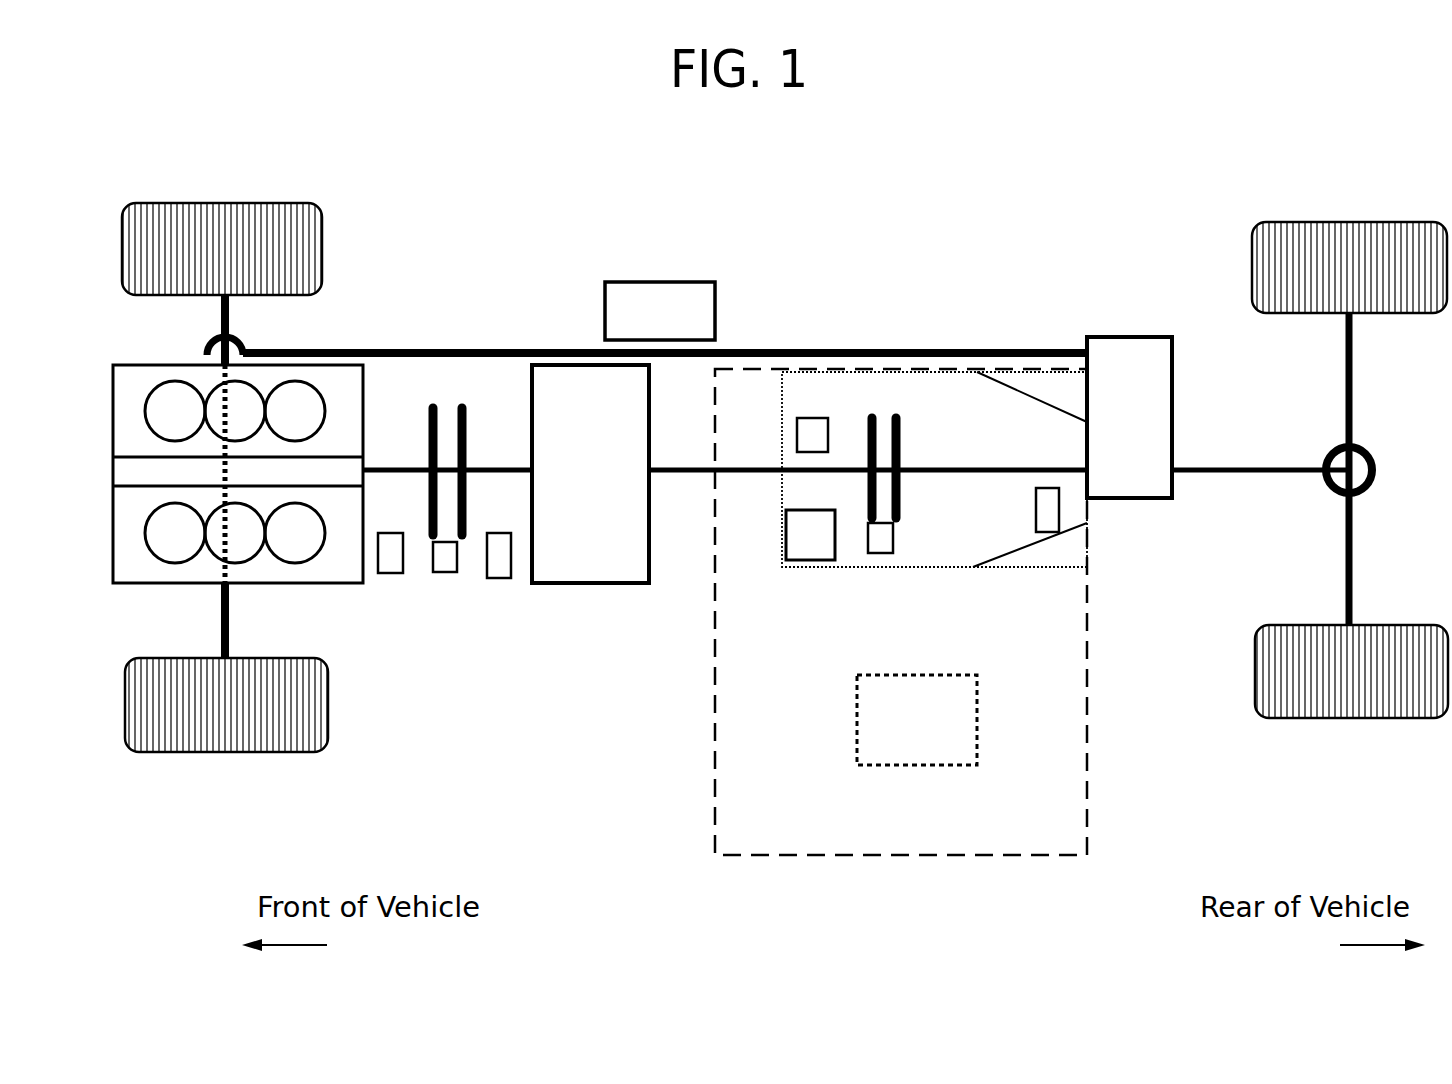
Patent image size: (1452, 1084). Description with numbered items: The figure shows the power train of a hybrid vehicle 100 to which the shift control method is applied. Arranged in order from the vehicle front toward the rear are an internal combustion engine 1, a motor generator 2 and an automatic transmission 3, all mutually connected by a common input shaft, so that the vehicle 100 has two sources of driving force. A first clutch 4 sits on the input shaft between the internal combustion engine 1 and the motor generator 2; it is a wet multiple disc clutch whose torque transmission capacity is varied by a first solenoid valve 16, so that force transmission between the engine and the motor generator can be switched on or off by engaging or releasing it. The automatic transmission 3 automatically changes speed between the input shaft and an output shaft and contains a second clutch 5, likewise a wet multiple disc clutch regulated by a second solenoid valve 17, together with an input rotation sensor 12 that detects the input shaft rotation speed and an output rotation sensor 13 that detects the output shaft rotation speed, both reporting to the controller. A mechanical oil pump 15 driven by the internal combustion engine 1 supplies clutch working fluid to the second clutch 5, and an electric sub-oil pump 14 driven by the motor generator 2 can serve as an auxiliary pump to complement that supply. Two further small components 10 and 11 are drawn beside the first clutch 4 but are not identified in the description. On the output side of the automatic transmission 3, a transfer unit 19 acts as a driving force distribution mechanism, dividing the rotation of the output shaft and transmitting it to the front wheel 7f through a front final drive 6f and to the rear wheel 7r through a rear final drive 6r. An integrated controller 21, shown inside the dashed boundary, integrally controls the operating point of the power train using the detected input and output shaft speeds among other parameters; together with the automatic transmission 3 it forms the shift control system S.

The vehicle 100 is at (1234, 200).
The internal combustion engine 1 is at (336, 584).
The motor generator 2 is at (592, 585).
The automatic transmission 3 is at (866, 372).
The first clutch 4 is at (430, 410).
The second clutch 5 is at (870, 420).
The rear final drive 6r is at (212, 352).
The front final drive 6f is at (1370, 455).
The front wheel 7f is at (205, 203).
The rear wheel 7r is at (1370, 223).
The sensor 10 is at (390, 575).
The sensor 11 is at (500, 580).
The input rotation sensor 12 is at (797, 430).
The output rotation sensor 13 is at (1047, 534).
The electric sub-oil pump 14 is at (672, 282).
The mechanical oil pump 15 is at (802, 562).
The first solenoid valve 16 is at (445, 574).
The second solenoid valve 17 is at (880, 555).
The transfer unit 19 is at (1107, 337).
The integrated controller 21 is at (900, 766).
The shift control system S is at (868, 858).